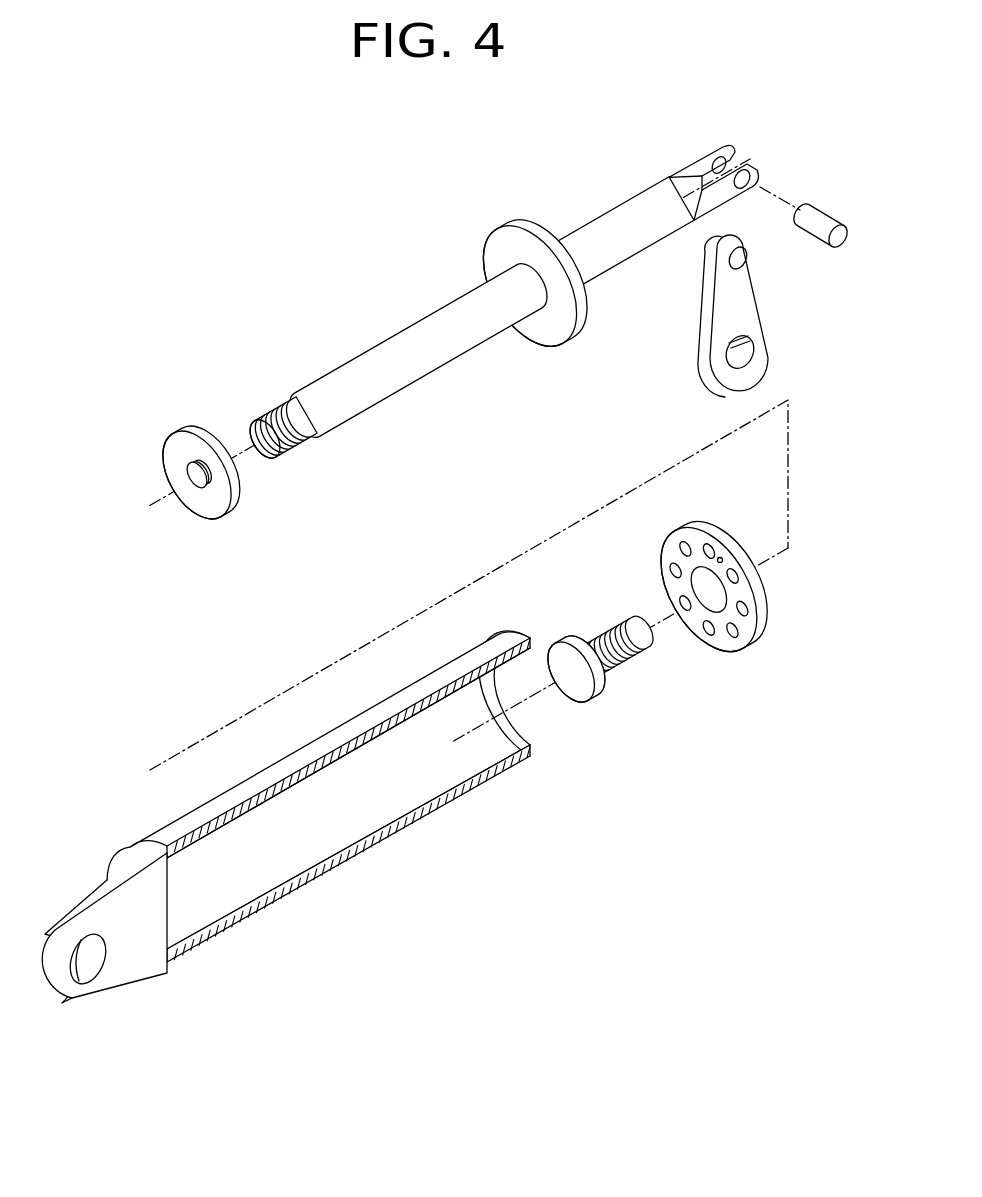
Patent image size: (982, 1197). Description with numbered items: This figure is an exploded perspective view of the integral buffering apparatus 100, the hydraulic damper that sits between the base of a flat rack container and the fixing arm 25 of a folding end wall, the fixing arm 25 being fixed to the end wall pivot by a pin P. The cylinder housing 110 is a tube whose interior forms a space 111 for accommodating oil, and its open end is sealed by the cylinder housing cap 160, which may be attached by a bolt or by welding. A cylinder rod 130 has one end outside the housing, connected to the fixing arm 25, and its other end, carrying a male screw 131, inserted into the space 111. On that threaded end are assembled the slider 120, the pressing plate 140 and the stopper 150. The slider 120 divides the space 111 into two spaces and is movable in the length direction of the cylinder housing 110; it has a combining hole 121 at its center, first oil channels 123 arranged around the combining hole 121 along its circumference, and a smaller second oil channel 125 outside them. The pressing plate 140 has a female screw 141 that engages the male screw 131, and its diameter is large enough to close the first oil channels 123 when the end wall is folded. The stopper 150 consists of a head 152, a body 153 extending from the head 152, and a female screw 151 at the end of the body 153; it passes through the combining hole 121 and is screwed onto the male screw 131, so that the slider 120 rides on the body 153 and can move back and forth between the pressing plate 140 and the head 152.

The integral buffering apparatus 100 is at (203, 198).
The cylinder housing 110 is at (286, 817).
The space 111 is at (321, 848).
The slider 120 is at (712, 614).
The combining hole 121 is at (698, 590).
The first oil channels 123 is at (727, 639).
The second oil channel 125 is at (720, 561).
The cylinder rod 130 is at (496, 304).
The male screw 131 is at (275, 410).
The pressing plate 140 is at (176, 461).
The female screw 141 is at (190, 472).
The stopper 150 is at (585, 660).
The female screw 151 is at (650, 660).
The head 152 is at (579, 647).
The body 153 is at (602, 628).
The cylinder housing cap 160 is at (497, 230).
The fixing arm 25 is at (757, 323).
The pin P is at (823, 205).